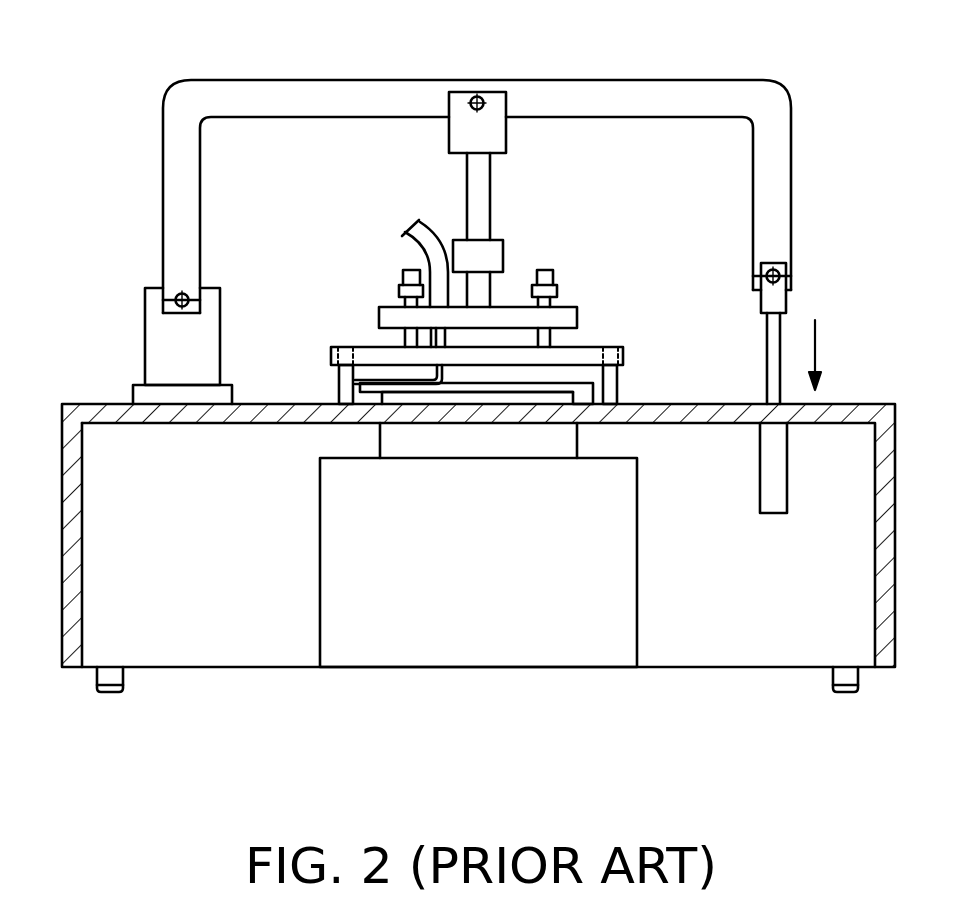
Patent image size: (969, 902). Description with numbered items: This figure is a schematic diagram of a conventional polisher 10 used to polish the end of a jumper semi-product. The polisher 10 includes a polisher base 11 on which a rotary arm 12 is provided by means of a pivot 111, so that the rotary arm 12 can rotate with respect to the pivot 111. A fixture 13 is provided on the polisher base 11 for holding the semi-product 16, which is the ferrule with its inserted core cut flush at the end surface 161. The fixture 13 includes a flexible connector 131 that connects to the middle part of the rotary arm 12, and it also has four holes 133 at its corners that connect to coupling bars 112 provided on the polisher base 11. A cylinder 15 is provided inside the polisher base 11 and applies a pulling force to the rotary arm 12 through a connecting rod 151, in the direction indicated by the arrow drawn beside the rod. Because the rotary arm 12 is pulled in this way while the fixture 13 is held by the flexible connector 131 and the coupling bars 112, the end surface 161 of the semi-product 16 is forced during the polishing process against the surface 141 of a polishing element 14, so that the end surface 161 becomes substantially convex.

The conventional polisher 10 is at (75, 78).
The polisher base 11 is at (233, 647).
The pivot 111 is at (167, 302).
The coupling bars 112 is at (340, 374).
The rotary arm 12 is at (177, 218).
The fixture 13 is at (619, 343).
The flexible connector 131 is at (502, 238).
The holes 133 is at (345, 346).
The polishing element 14 is at (470, 388).
The surface of the polishing element 141 is at (578, 381).
The cylinder 15 is at (745, 388).
The connecting rod 151 is at (766, 356).
The semi-product of the jumper 16 is at (431, 238).
The end surface 161 is at (344, 378).